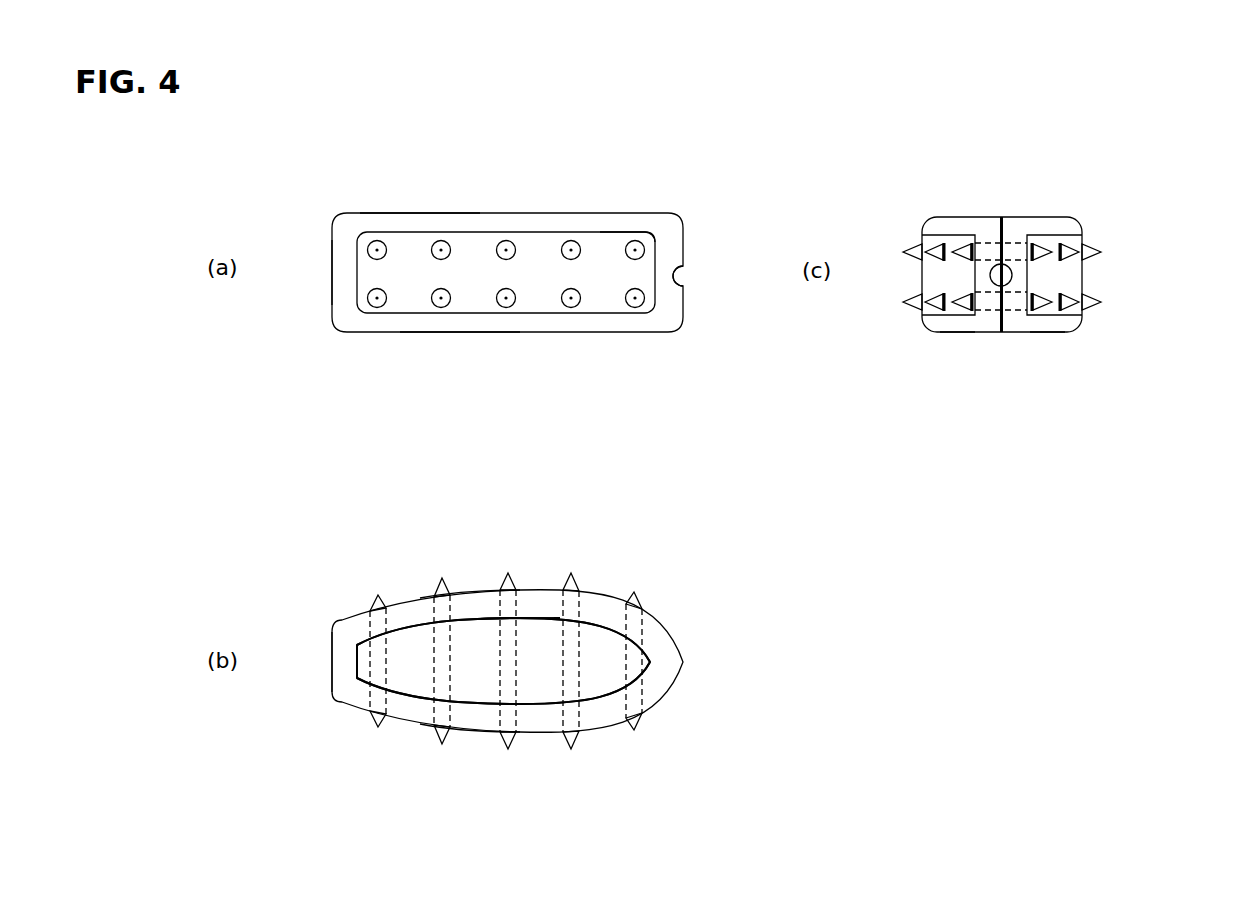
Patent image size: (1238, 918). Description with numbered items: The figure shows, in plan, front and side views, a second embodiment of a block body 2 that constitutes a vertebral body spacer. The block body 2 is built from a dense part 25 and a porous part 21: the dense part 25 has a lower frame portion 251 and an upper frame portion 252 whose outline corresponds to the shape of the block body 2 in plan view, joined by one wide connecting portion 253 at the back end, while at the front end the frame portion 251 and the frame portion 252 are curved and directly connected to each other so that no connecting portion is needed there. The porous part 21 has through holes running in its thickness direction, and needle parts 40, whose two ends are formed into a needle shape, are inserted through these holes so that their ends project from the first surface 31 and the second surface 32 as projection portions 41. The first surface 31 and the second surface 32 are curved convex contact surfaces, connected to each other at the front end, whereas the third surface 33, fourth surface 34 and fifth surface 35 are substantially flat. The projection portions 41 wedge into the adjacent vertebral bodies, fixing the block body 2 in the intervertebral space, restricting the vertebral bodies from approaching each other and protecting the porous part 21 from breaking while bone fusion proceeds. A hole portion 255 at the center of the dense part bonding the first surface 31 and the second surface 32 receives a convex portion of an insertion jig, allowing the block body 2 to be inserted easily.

The block body 2 is at (562, 193).
The porous part 21 is at (600, 292).
The dense part 25 is at (467, 232).
The first surface 31 is at (610, 247).
The second surface 32 is at (471, 733).
The third surface 33 is at (448, 332).
The fourth surface 34 is at (407, 213).
The fifth surface 35 is at (332, 273).
The needle part 40 is at (990, 300).
The projection portion 41 is at (637, 300).
The lower frame portion 251 is at (1040, 227).
The upper frame portion 252 is at (970, 227).
The connecting portion 253 is at (344, 672).
The hole portion 255 is at (683, 273).